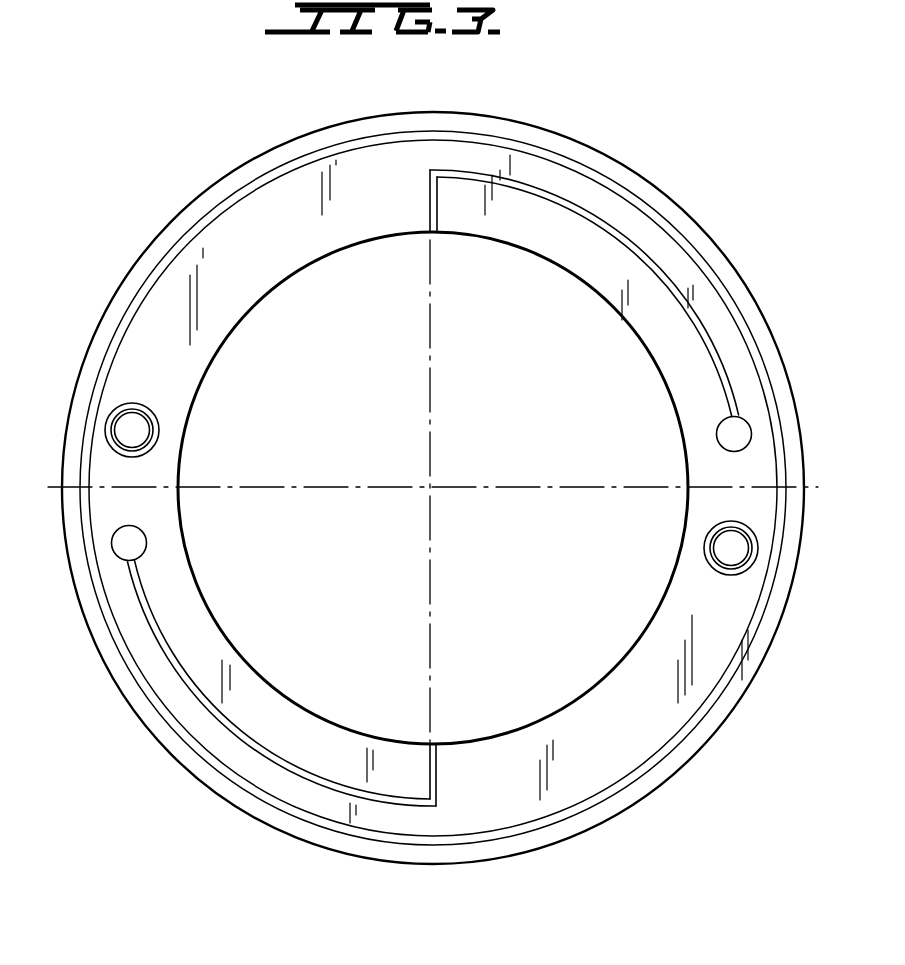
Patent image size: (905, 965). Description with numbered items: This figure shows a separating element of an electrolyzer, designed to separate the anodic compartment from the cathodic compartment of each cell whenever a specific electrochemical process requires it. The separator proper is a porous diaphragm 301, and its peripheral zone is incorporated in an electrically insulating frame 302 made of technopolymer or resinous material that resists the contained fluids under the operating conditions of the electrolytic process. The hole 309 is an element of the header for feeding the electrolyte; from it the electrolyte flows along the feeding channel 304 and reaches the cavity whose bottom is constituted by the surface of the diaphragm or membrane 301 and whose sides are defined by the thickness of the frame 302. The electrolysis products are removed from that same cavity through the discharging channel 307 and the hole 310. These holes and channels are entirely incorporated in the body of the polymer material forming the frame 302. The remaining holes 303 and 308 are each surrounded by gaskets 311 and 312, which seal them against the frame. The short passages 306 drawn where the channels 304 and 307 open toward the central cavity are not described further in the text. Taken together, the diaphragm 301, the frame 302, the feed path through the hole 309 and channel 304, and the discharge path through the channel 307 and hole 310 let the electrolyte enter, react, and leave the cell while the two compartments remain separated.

The porous diaphragm 301 is at (578, 660).
The electrically insulating frame 302 is at (642, 193).
The hole 303 is at (722, 551).
The feeding channel 304 is at (297, 770).
The radial channel 306 is at (428, 236).
The discharging channel 307 is at (547, 195).
The hole 308 is at (190, 418).
The hole 309 is at (138, 545).
The hole 310 is at (717, 432).
The gasket 311 is at (741, 565).
The gasket 312 is at (129, 405).